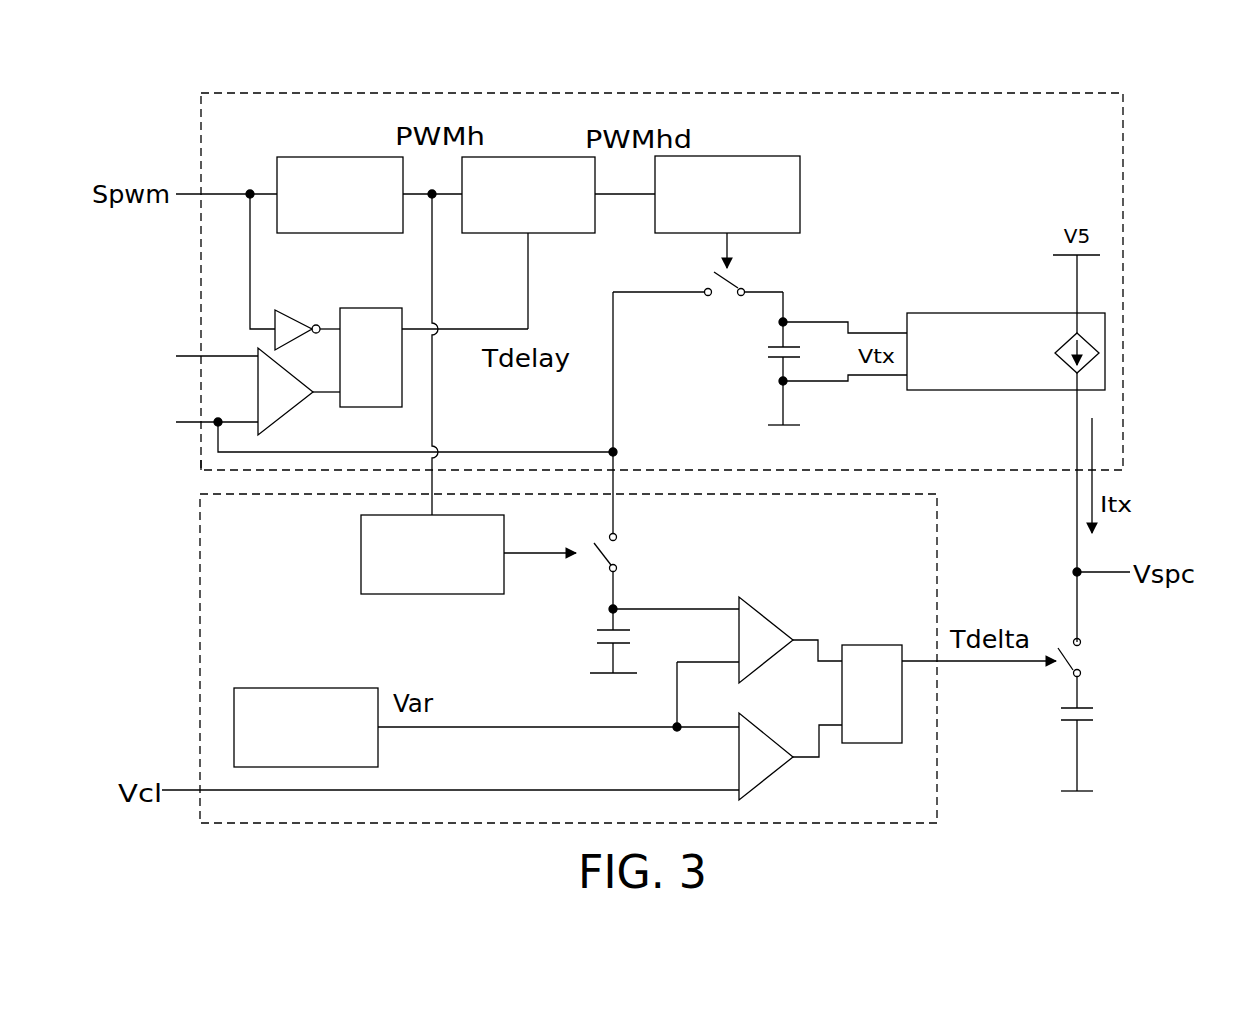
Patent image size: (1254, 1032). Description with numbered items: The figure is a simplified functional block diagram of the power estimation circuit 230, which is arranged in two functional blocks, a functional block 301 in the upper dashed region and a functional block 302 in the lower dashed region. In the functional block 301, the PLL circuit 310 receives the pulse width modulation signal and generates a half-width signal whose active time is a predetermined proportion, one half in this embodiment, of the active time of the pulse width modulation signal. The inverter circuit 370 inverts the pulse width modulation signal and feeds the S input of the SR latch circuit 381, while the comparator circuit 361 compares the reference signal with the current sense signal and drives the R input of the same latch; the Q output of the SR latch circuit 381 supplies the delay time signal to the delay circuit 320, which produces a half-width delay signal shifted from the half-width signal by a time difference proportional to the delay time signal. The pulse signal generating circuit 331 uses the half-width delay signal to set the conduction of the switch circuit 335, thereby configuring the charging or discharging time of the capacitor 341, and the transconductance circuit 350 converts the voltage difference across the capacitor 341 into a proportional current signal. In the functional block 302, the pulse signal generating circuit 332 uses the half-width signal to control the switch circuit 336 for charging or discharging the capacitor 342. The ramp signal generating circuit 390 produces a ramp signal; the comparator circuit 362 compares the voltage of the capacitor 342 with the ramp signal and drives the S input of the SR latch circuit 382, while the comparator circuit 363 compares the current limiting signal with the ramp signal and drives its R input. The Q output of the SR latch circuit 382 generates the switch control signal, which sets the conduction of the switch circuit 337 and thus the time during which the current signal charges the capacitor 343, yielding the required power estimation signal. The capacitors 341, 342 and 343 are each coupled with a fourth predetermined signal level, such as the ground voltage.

The power estimation circuit 230 is at (1171, 186).
The functional block 301 is at (200, 460).
The functional block 302 is at (200, 542).
The phase locked loop (PLL) circuit 310 is at (290, 157).
The delay circuit 320 is at (490, 157).
The pulse signal generating circuit 331 is at (725, 156).
The pulse signal generating circuit 332 is at (428, 594).
The switch circuit 335 is at (721, 298).
The switch circuit 336 is at (624, 557).
The switch circuit 337 is at (1099, 656).
The capacitor 341 is at (766, 351).
The capacitor 342 is at (588, 637).
The capacitor 343 is at (1058, 714).
The transconductance circuit 350 is at (947, 313).
The comparator circuit 361 is at (285, 412).
The comparator circuit 362 is at (770, 616).
The comparator circuit 363 is at (770, 776).
The inverter circuit 370 is at (290, 310).
The SR latch circuit 381 is at (357, 308).
The SR latch circuit 382 is at (873, 645).
The ramp signal generating circuit 390 is at (293, 688).